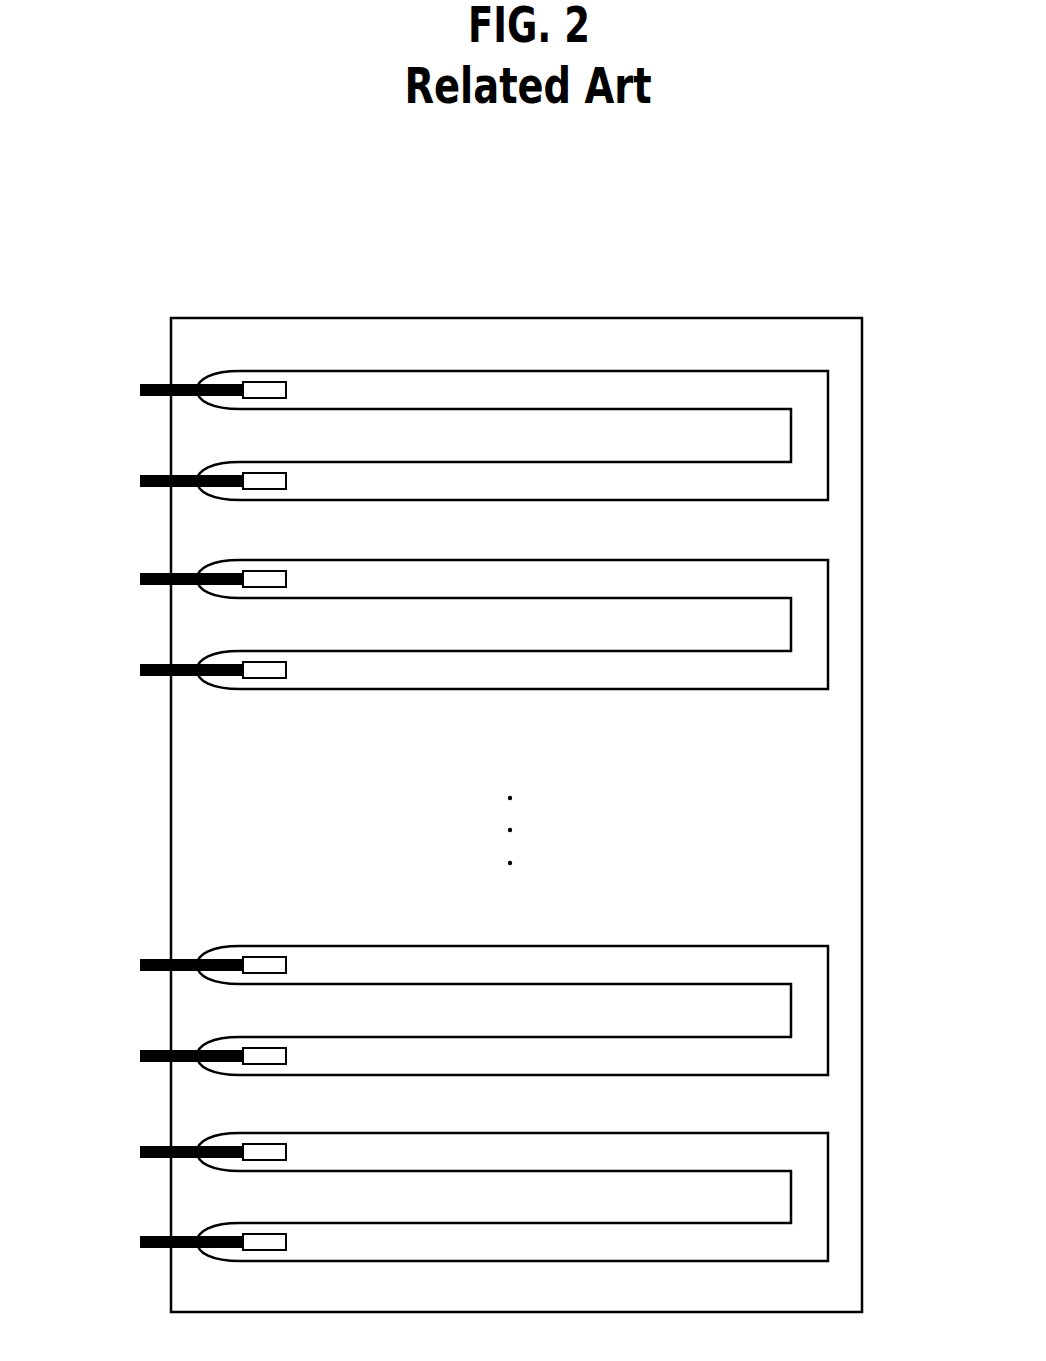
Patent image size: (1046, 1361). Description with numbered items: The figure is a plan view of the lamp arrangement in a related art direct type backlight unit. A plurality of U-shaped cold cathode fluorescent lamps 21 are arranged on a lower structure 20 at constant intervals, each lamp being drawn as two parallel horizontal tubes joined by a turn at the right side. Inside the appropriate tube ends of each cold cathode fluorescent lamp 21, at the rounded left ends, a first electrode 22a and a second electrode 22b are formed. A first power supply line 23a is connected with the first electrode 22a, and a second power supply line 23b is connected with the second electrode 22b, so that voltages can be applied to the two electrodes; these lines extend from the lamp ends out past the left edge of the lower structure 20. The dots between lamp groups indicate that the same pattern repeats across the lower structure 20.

The lower structure 20 is at (512, 333).
The U-shaped cold cathode fluorescent lamp 21 is at (810, 1007).
The first electrode 22a is at (259, 966).
The second electrode 22b is at (265, 1053).
The first power supply line 23a is at (140, 964).
The second power supply line 23b is at (140, 1055).